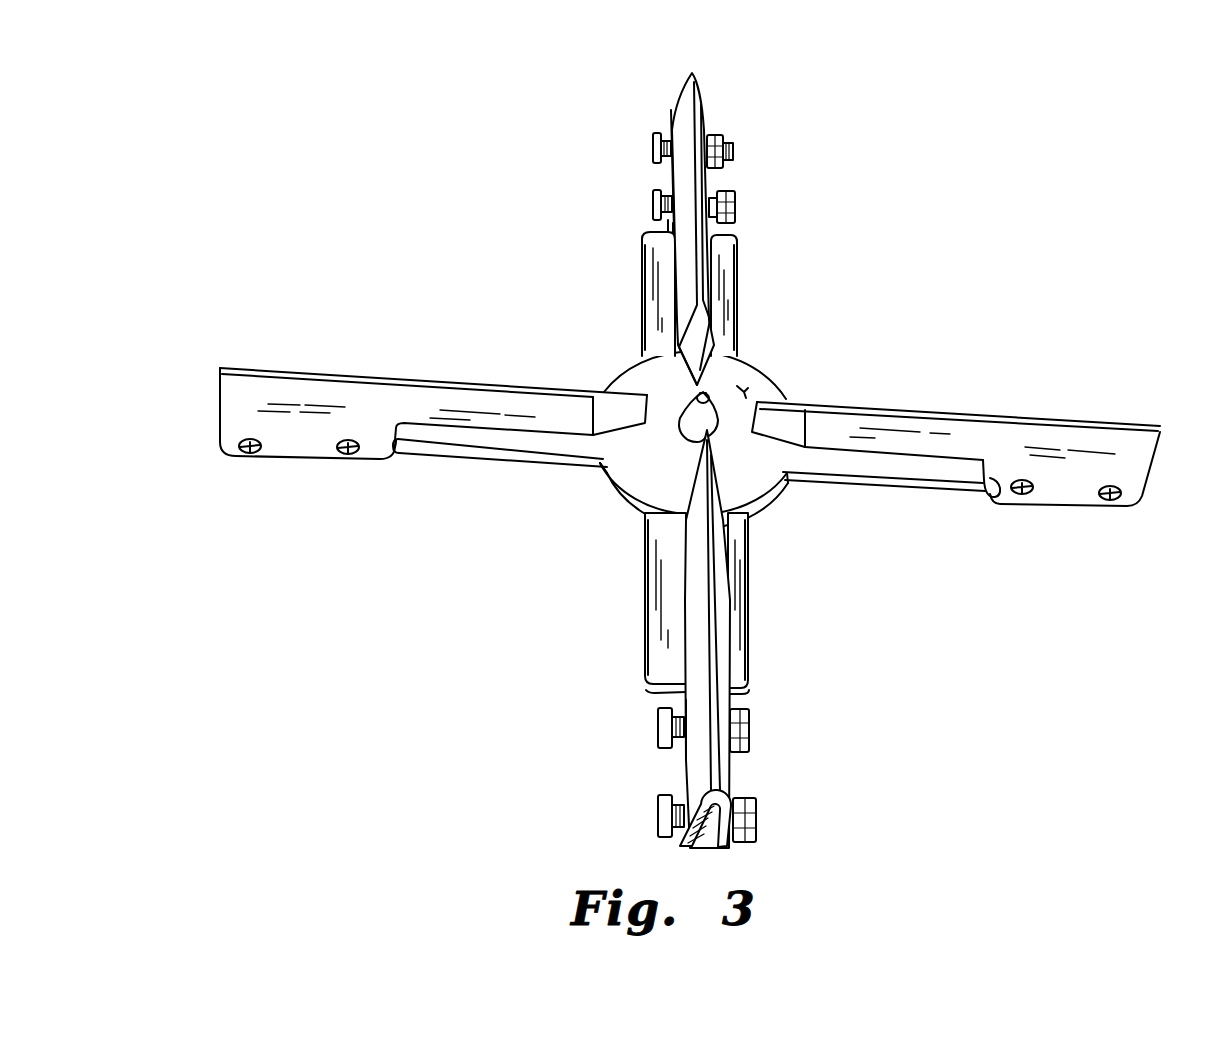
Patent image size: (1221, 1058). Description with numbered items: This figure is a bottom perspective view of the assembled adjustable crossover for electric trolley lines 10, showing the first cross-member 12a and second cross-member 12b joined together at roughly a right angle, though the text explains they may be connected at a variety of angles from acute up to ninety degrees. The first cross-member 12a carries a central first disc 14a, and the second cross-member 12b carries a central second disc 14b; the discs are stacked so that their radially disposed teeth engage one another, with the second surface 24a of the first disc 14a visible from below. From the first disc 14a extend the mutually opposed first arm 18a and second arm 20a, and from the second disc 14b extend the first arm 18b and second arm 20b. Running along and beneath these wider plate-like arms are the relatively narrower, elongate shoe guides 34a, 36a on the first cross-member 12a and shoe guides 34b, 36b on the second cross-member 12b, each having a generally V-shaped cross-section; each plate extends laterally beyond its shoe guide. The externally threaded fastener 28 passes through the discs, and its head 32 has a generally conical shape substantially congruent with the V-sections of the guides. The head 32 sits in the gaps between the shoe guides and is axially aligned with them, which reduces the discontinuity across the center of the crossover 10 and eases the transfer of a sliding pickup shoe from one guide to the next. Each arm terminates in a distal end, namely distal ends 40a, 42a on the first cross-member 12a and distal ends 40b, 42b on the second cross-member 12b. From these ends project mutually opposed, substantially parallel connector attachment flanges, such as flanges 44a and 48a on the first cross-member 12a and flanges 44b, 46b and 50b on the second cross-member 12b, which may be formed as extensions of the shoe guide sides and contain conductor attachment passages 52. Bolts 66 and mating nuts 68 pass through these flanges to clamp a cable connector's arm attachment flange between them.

The adjustable crossover for electric trolley lines 10 is at (398, 722).
The first cross-member 12a is at (446, 478).
The second cross-member 12b is at (626, 640).
The first disc 14a is at (680, 469).
The second disc 14b is at (628, 508).
The first arm 18a is at (520, 465).
The first arm 18b is at (749, 606).
The second arm 20a is at (943, 492).
The second arm 20b is at (642, 270).
The second surface 24a is at (743, 388).
The externally threaded fastener 28 is at (676, 392).
The head 32 is at (718, 433).
The shoe guide 34a is at (370, 368).
The shoe guide 34b is at (713, 580).
The shoe guide 36a is at (885, 407).
The shoe guide 36b is at (712, 276).
The distal end 40a is at (397, 462).
The distal end 40b is at (748, 692).
The distal end 42a is at (995, 497).
The distal end 42b is at (660, 228).
The first connector attachment flange 44a is at (270, 462).
The first connector attachment flange 44b is at (722, 848).
The second connector attachment flange 46b is at (684, 758).
The first connector attachment flange 48a is at (1067, 498).
The second connector attachment flange 50b is at (664, 186).
The conductor attachment passages 52 is at (247, 452).
The bolts 66 is at (652, 143).
The nuts 68 is at (735, 195).